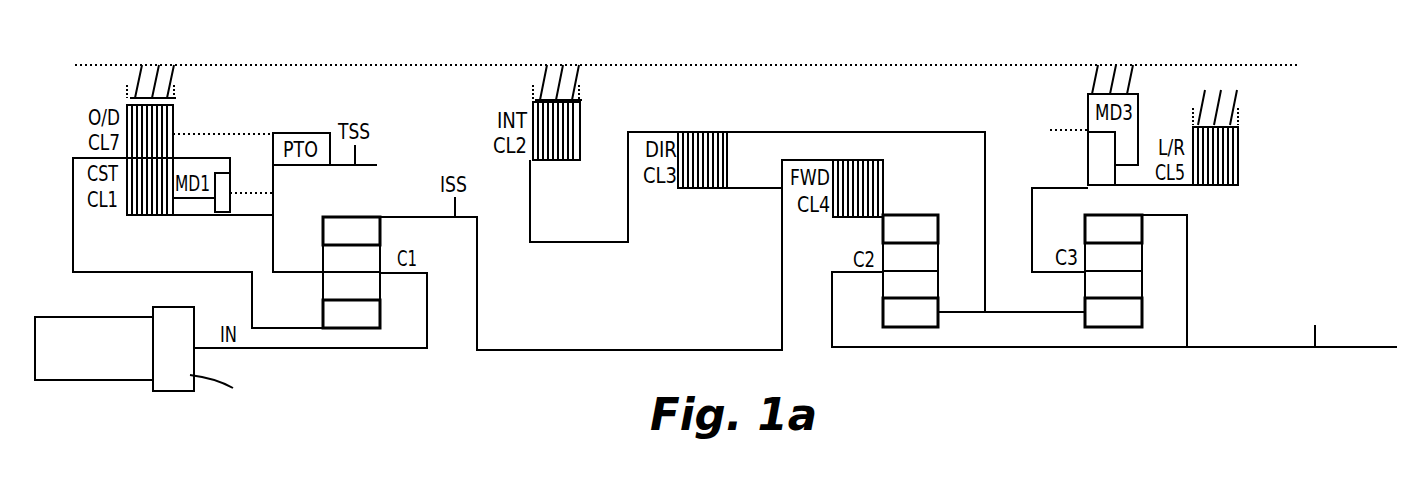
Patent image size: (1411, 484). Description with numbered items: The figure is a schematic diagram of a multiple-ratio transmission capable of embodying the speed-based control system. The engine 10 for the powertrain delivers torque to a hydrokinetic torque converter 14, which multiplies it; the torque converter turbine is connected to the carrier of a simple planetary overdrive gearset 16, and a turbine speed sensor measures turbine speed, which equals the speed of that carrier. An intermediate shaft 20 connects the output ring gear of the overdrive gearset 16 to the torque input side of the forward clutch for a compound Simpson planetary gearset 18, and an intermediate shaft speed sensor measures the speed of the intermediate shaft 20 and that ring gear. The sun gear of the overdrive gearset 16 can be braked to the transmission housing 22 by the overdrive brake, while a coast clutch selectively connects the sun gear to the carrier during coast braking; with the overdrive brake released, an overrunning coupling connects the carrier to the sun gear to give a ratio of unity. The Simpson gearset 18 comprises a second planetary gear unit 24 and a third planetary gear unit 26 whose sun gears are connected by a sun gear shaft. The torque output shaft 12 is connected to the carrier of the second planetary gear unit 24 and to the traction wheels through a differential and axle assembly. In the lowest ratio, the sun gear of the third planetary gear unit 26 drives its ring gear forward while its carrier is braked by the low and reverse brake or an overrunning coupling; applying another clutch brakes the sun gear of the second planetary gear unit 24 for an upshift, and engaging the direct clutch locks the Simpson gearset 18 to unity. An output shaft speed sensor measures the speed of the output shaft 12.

The engine 10 is at (95, 380).
The torque output shaft 12 is at (1212, 347).
The hydrokinetic torque converter 14 is at (170, 390).
The simple planetary overdrive gearset 16 is at (363, 330).
The compound Simpson planetary gearset 18 is at (1017, 312).
The intermediate shaft 20 is at (602, 350).
The transmission housing 22 is at (168, 75).
The second planetary gear unit 24 is at (906, 213).
The third planetary gear unit 26 is at (1088, 213).